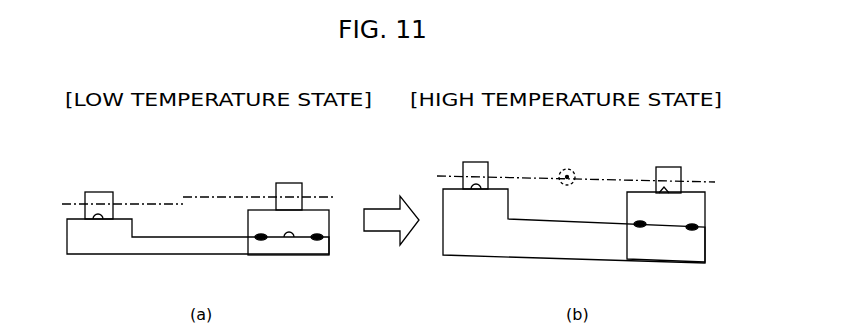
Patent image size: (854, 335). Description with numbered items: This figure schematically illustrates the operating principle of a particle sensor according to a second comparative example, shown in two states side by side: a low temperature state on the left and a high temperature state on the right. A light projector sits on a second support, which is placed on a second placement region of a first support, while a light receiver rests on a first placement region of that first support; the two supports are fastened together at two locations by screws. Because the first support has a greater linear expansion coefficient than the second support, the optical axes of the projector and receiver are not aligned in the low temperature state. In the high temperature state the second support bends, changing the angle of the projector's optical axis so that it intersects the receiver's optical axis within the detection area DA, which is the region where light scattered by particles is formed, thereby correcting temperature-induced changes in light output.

The detection area DA is at (562, 170).